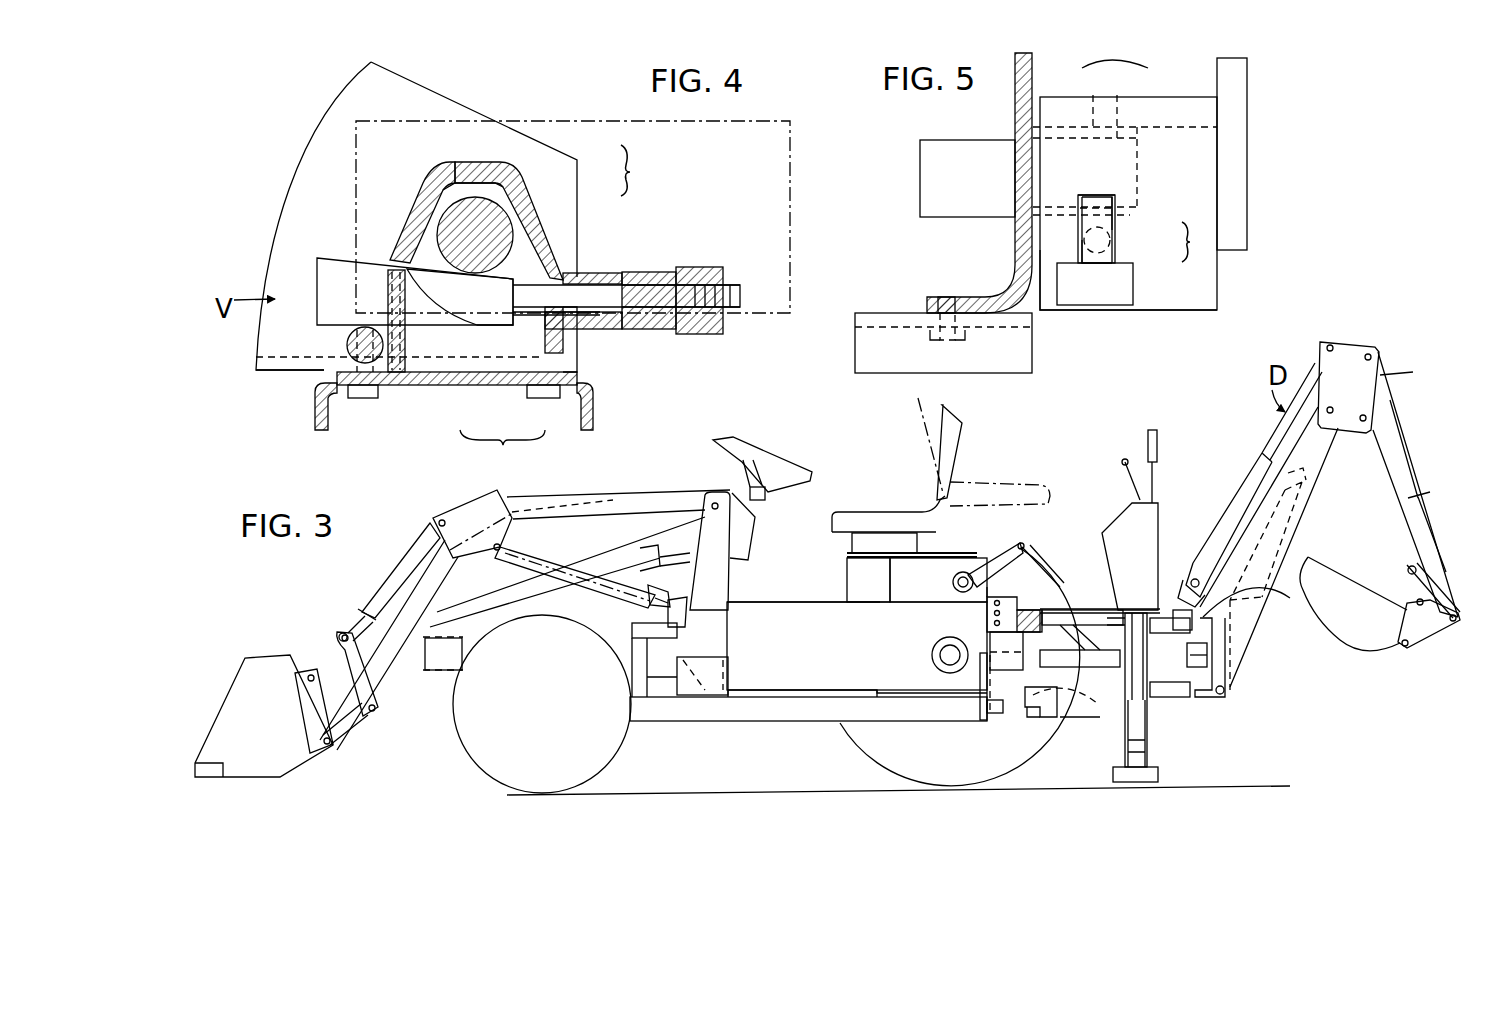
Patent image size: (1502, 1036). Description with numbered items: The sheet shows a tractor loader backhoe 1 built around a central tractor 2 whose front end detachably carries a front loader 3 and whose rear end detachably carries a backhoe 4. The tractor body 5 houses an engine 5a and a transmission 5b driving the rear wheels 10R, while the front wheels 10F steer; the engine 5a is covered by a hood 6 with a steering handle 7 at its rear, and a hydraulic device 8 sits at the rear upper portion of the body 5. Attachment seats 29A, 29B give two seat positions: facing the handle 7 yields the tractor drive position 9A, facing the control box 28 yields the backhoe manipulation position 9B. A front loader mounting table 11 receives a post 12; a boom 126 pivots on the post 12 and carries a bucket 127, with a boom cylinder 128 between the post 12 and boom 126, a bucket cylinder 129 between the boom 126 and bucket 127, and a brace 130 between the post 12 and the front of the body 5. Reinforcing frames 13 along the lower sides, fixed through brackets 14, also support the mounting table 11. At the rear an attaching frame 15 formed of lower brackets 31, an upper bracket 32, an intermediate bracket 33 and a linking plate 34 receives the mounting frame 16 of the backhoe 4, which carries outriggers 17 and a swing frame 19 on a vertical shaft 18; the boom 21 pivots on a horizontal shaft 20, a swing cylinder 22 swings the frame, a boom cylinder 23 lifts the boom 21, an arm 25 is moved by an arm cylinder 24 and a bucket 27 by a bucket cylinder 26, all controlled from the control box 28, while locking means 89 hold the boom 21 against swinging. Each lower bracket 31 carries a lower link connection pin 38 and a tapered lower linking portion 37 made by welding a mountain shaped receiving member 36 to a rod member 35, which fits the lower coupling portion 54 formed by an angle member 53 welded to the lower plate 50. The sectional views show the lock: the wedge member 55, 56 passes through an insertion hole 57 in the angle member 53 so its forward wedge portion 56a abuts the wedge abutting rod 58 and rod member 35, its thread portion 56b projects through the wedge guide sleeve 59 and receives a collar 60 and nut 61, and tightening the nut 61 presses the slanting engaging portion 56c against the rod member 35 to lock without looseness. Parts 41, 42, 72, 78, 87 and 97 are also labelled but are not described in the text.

In FIG. 3, the tractor loader backhoe 1 is at (420, 528).
In FIG. 3, the tractor 2 is at (853, 510).
In FIG. 3, the front loader 3 is at (693, 478).
In FIG. 3, the backhoe 4 is at (1112, 452).
In FIG. 3, the tractor body 5 is at (781, 598).
In FIG. 3, the engine 5a is at (645, 700).
In FIG. 3, the transmission 5b is at (755, 677).
In FIG. 3, the hood 6 is at (690, 490).
In FIG. 3, the steering handle 7 is at (777, 470).
In FIG. 3, the hydraulic device 8 is at (893, 562).
In FIG. 3, the tractor drive position 9A is at (918, 503).
In FIG. 3, the backhoe manipulation position 9B is at (1010, 485).
In FIG. 3, the front wheels 10F is at (467, 742).
In FIG. 3, the rear wheels 10R is at (863, 742).
In FIG. 3, the front loader mounting table 11 is at (690, 692).
In FIG. 3, the post 12 is at (713, 633).
In FIG. 3, the reinforcing frames 13 is at (786, 722).
In FIG. 3, the brackets 14 is at (940, 690).
In FIG. 3, the attaching frame 15 is at (1020, 720).
In FIG. 3, the mounting frame 16 is at (1075, 722).
In FIG. 3, the outriggers 17 is at (1155, 752).
In FIG. 3, the vertical shaft 18 is at (1180, 608).
In FIG. 3, the swing frame 19 is at (1209, 700).
In FIG. 3, the horizontal shaft 20 is at (1225, 693).
In FIG. 3, the boom 21 is at (1250, 615).
In FIG. 3, the swing cylinder 22 is at (1090, 650).
In FIG. 3, the boom cylinder 23 is at (1275, 540).
In FIG. 3, the arm cylinder 24 is at (1248, 485).
In FIG. 3, the arm 25 is at (1388, 467).
In FIG. 3, the bucket cylinder 26 is at (1395, 425).
In FIG. 3, the bucket 27 is at (1365, 605).
In FIG. 3, the control box 28 is at (1130, 528).
In FIG. 3, the attachment seat 29A is at (865, 540).
In FIG. 3, the attachment seat 29B is at (1010, 505).
In FIG. 4, the lower brackets 31 is at (290, 366).
In FIG. 5, the lower brackets 31 is at (1015, 240).
In FIG. 3, the lower brackets 31 is at (998, 695).
In FIG. 3, the upper bracket 32 is at (990, 615).
In FIG. 3, the intermediate bracket 33 is at (990, 642).
In FIG. 4, the linking plate 34 is at (594, 400).
In FIG. 5, the linking plate 34 is at (905, 318).
In FIG. 3, the linking plate 34 is at (1043, 718).
In FIG. 4, the rod member 35 is at (498, 224).
In FIG. 5, the rod member 35 is at (1134, 102).
In FIG. 4, the receiving member 36 is at (505, 194).
In FIG. 5, the receiving member 36 is at (1091, 96).
In FIG. 4, the lower linking portion 37 is at (641, 170).
In FIG. 5, the lower linking portion 37 is at (1125, 124).
In FIG. 3, the lower linking portion 37 is at (1097, 703).
In FIG. 3, the lower link connection pin 38 is at (985, 690).
In FIG. 3, the adjustment holes 41 is at (1002, 605).
In FIG. 3, the lock member 42 is at (1042, 600).
In FIG. 4, the lower plate 50 is at (594, 121).
In FIG. 5, the lower plate 50 is at (1240, 172).
In FIG. 4, the angle member 53 is at (490, 162).
In FIG. 5, the angle member 53 is at (1190, 312).
In FIG. 4, the lower coupling portion 54 is at (455, 152).
In FIG. 5, the lower coupling portion 54 is at (1222, 298).
In FIG. 4, the wedge member 55 is at (307, 270).
In FIG. 5, the wedge member 55 is at (1127, 192).
In FIG. 4, the wedge member 56 is at (502, 450).
In FIG. 5, the wedge member 56 is at (1144, 229).
In FIG. 4, the forward wedge portion 56a is at (498, 322).
In FIG. 5, the forward wedge portion 56a is at (1113, 222).
In FIG. 4, the thread portion 56b is at (547, 308).
In FIG. 5, the thread portion 56b is at (1116, 250).
In FIG. 4, the slanting engaging portion 56c is at (530, 262).
In FIG. 4, the insertion hole 57 is at (480, 315).
In FIG. 4, the wedge abutting rod 58 is at (370, 350).
In FIG. 5, the wedge abutting rod 58 is at (1110, 300).
In FIG. 4, the wedge guide sleeve 59 is at (612, 282).
In FIG. 4, the collar 60 is at (663, 278).
In FIG. 4, the nut 61 is at (699, 272).
In FIG. 3, the stand column 72 is at (1135, 690).
In FIG. 3, the link bar 78 is at (1232, 650).
In FIG. 3, the swing arc 87 is at (1257, 598).
In FIG. 3, the locking means 89 is at (1222, 558).
In FIG. 3, the lever pivot 97 is at (952, 583).
In FIG. 3, the boom 126 is at (603, 512).
In FIG. 3, the bucket 127 is at (277, 677).
In FIG. 3, the boom cylinder 128 is at (635, 592).
In FIG. 3, the bucket cylinder 129 is at (385, 587).
In FIG. 3, the brace 130 is at (527, 605).